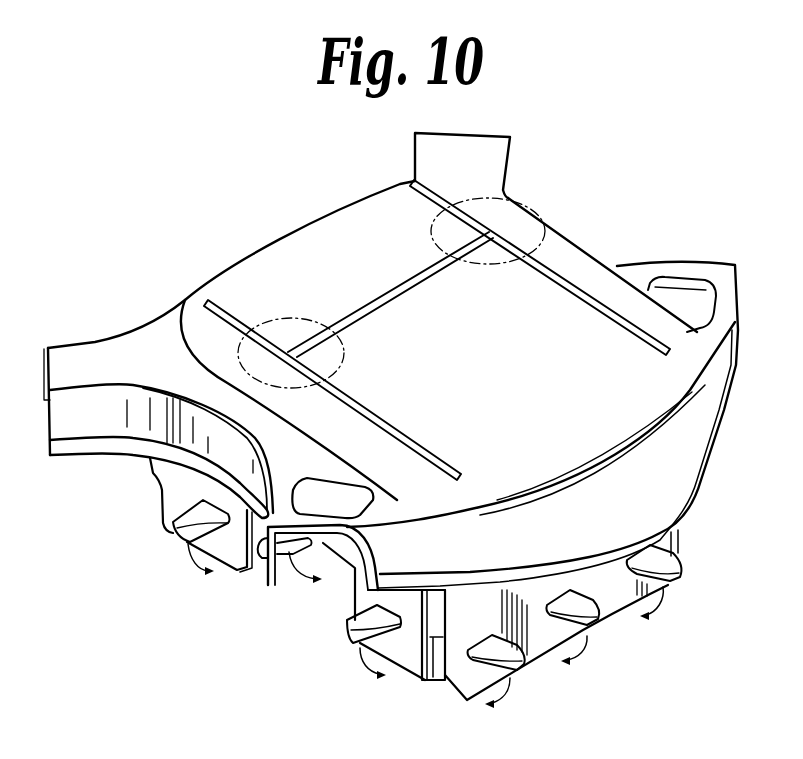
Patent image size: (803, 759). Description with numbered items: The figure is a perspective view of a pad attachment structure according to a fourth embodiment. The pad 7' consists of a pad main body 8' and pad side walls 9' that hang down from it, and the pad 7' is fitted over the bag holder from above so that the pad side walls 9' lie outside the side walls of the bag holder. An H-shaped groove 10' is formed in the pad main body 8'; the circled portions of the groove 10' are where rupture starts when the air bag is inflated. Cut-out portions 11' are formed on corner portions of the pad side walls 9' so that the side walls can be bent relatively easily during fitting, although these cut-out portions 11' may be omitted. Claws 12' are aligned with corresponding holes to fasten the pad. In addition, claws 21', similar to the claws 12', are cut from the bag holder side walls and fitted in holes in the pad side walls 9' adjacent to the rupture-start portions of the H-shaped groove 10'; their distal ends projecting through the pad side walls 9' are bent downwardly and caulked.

The pad 7' is at (391, 393).
The pad main body 8' is at (279, 316).
The pad side walls 9' is at (161, 451).
The H-shaped groove 10' is at (540, 267).
The cut-out portions 11' is at (523, 615).
The claws 12' is at (401, 587).
The claws 21' is at (318, 570).